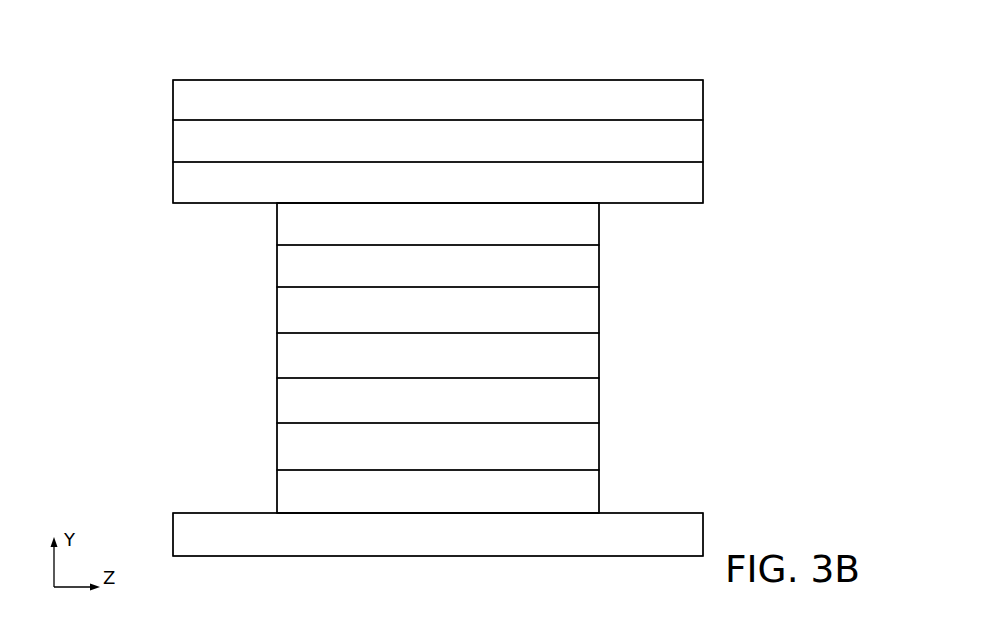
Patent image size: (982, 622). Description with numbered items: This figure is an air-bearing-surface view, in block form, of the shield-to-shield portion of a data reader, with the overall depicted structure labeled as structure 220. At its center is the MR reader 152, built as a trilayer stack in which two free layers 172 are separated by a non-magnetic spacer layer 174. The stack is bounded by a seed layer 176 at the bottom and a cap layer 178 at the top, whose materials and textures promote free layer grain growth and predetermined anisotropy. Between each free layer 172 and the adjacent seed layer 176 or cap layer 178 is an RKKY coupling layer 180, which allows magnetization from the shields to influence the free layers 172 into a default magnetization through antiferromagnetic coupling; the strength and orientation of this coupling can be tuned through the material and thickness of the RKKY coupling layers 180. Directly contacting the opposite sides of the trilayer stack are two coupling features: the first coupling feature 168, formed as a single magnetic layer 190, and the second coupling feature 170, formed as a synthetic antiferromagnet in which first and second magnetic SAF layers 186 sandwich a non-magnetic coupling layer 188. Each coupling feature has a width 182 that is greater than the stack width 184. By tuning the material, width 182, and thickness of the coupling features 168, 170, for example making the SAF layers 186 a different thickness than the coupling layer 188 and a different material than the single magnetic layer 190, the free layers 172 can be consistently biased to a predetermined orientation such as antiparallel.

The magnetic recording layer structure 220 is at (795, 30).
The second coupling feature 170 is at (168, 218).
The first and second magnetic SAF layers 186 is at (734, 184).
The non-magnetic coupling layer 188 is at (705, 139).
The width of coupling feature 182 is at (692, 62).
The stack width 184 is at (587, 43).
The MR reader 152 is at (248, 351).
The cap layer 178 is at (600, 225).
The RKKY coupling layer 180 is at (636, 452).
The free layer 172 is at (636, 404).
The non-magnetic spacer layer 174 is at (600, 363).
The seed layer 176 is at (600, 502).
The first coupling feature 168 is at (189, 508).
The single magnetic layer 190 is at (704, 518).